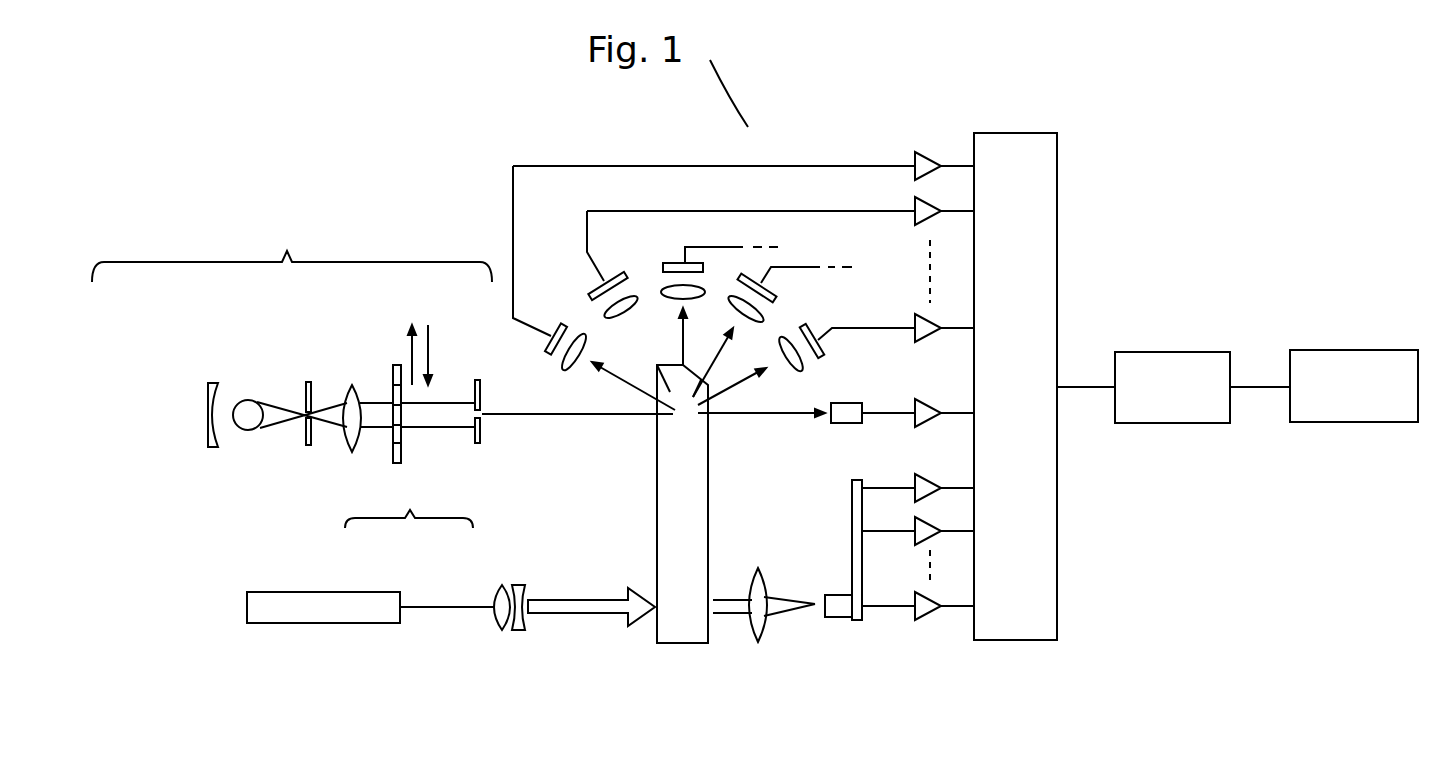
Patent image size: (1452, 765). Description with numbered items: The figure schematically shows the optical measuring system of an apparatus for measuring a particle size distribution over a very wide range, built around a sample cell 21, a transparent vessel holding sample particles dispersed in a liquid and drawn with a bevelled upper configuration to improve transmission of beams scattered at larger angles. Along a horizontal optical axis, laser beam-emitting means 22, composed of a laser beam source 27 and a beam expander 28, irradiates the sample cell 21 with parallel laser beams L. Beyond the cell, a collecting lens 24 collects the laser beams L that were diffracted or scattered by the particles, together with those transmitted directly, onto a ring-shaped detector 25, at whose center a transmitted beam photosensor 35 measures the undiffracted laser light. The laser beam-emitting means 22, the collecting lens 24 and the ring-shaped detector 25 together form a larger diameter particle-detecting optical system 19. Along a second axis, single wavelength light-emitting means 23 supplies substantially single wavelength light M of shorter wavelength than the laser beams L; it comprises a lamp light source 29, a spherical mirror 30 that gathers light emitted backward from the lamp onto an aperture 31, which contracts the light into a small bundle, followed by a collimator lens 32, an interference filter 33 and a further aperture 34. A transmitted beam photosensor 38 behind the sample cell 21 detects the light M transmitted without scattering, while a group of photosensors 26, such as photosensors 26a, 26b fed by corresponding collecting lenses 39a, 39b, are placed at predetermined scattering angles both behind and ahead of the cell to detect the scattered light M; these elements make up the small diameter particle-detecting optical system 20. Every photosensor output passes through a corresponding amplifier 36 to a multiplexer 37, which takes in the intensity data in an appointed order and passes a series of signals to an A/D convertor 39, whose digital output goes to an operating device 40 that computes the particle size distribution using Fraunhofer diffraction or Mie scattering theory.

The larger diameter particle-detecting optical system 19 is at (643, 665).
The small diameter particle-detecting optical system 20 is at (477, 246).
The sample cell 21 is at (657, 528).
The laser beam-emitting means 22 is at (409, 504).
The single wavelength light-emitting means 23 is at (292, 250).
The collecting lens 24 is at (753, 630).
The ring-shaped detector 25 is at (842, 516).
The group of photosensors 26 is at (660, 255).
The photosensor 26a is at (553, 333).
The photosensor 26b is at (620, 278).
The laser beam source 27 is at (355, 592).
The beam expander 28 is at (507, 585).
The lamp light source 29 is at (247, 400).
The spherical mirror 30 is at (205, 383).
The aperture 31 is at (308, 382).
The collimator lens 32 is at (352, 385).
The interference filter 33 is at (396, 365).
The aperture 34 is at (477, 380).
The transmitted beam photosensor 35 is at (840, 618).
The amplifier 36 is at (920, 150).
The multiplexer 37 is at (1057, 230).
The transmitted beam photosensor 38 is at (850, 402).
The A/D convertor 39 is at (1158, 352).
The collecting lens 39a is at (578, 368).
The collecting lens 39b is at (647, 310).
The operating device 40 is at (1338, 350).
The single wavelength light M is at (560, 417).
The laser beams L is at (444, 607).